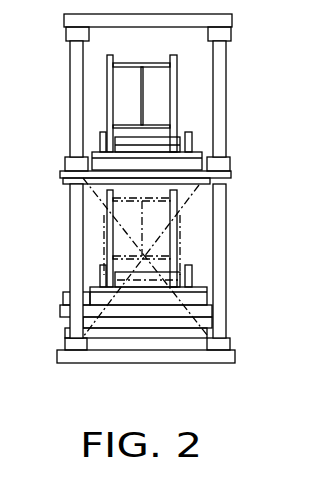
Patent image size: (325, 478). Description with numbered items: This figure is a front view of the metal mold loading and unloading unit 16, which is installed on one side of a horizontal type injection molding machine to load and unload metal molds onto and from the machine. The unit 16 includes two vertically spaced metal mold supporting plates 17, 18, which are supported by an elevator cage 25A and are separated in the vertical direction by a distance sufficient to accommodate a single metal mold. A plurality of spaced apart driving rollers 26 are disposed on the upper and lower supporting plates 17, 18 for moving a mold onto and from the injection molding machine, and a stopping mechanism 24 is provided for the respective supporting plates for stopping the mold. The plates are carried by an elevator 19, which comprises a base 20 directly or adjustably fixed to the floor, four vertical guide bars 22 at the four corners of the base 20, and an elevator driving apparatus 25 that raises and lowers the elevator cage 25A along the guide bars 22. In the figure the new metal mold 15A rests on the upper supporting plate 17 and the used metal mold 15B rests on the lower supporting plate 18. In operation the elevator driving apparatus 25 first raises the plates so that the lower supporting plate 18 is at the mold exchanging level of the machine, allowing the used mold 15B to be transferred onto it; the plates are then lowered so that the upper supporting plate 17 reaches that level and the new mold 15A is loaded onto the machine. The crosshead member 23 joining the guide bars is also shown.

The metal mold loading and unloading unit 16 is at (236, 68).
The elevator 19 is at (60, 121).
The vertical guide bars 22 is at (75, 66).
The new metal mold 15A is at (166, 97).
The used metal mold 15B is at (140, 233).
The driving rollers 26 is at (181, 143).
The upper metal mold supporting plate 17 is at (180, 157).
The crosshead 23 is at (217, 164).
The elevator driving apparatus 25 is at (98, 196).
The elevator cage 25A is at (82, 183).
The lower metal mold supporting plate 18 is at (197, 284).
The stopping mechanism 24 is at (62, 312).
The base 20 is at (62, 358).